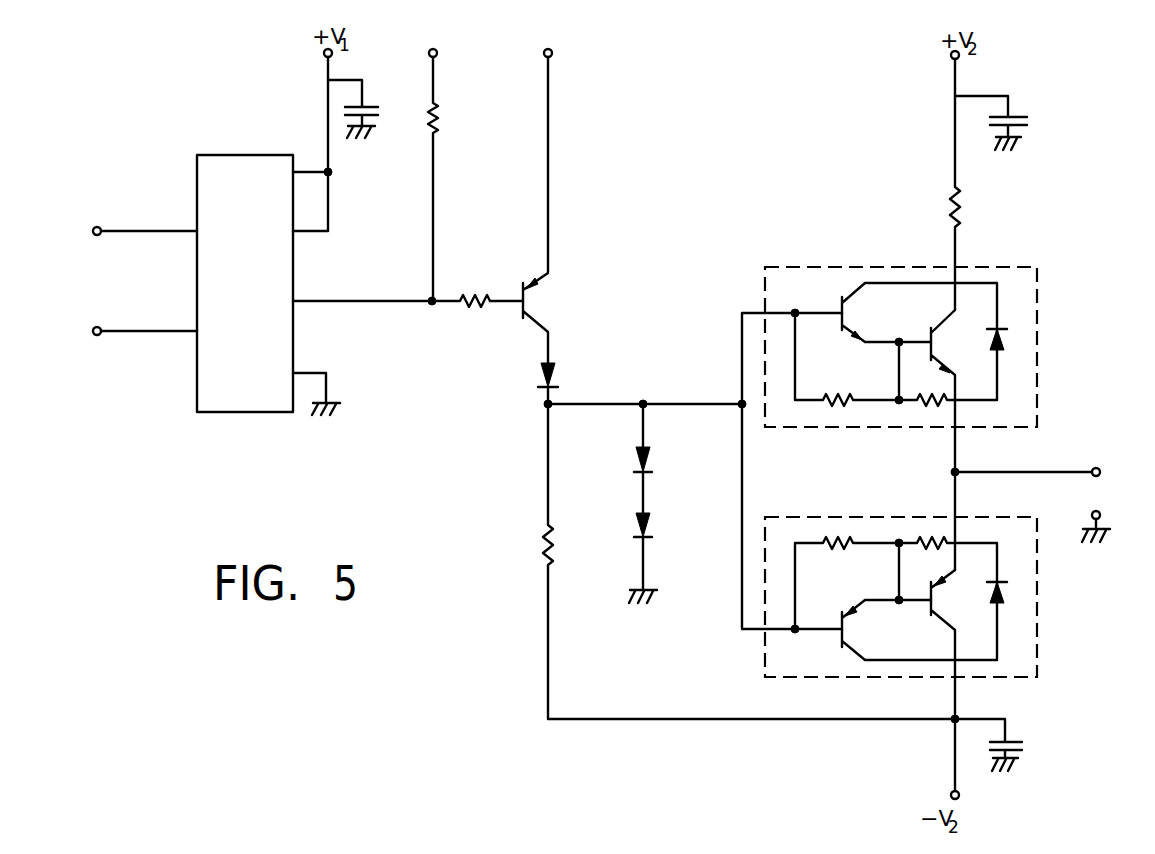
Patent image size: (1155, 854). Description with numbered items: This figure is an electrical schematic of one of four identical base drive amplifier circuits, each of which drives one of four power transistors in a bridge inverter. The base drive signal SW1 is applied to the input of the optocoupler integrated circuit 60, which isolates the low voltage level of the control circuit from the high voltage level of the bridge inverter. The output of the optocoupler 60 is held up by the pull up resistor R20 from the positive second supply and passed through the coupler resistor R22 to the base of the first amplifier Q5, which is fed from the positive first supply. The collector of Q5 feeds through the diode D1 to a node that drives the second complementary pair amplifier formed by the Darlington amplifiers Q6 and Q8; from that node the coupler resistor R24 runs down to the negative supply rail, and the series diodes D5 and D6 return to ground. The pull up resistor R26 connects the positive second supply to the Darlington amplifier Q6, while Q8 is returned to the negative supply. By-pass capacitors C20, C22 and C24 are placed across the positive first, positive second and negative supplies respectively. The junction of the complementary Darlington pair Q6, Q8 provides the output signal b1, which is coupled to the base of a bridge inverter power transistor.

The optocoupler integrated circuit 60 is at (268, 83).
The base drive signal SW1 is at (120, 281).
The by-pass capacitor C20 is at (371, 106).
The by-pass capacitor C22 is at (1012, 123).
The by-pass capacitor C24 is at (1013, 745).
The pull up resistor R20 is at (454, 162).
The coupler resistor R22 is at (408, 283).
The coupler resistor R24 is at (720, 561).
The pull up resistor R26 is at (931, 184).
The first amplifier Q5 is at (548, 193).
The Darlington amplifier Q6 is at (848, 267).
The Darlington amplifier Q8 is at (910, 517).
The diode D1 is at (561, 382).
The diode D5 is at (662, 458).
The diode D6 is at (659, 558).
The output signal b1 is at (1042, 478).